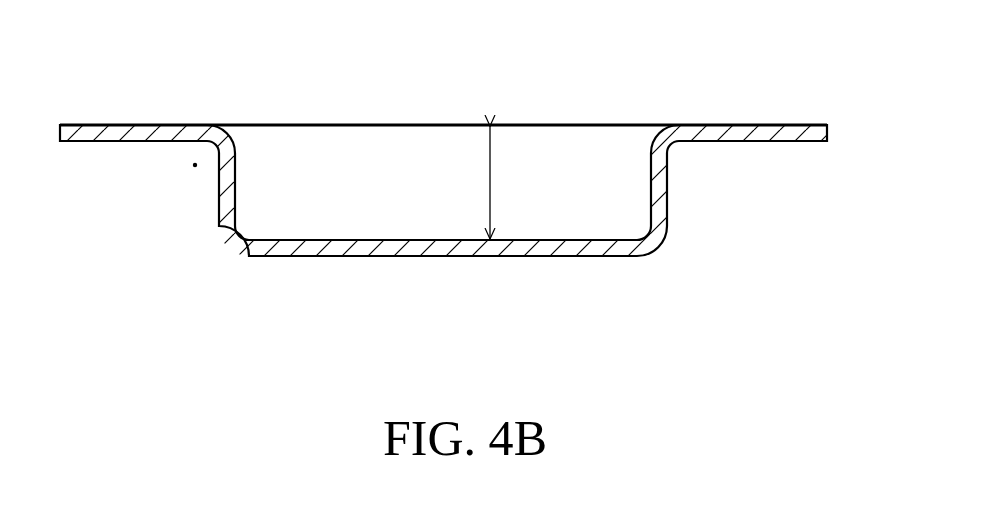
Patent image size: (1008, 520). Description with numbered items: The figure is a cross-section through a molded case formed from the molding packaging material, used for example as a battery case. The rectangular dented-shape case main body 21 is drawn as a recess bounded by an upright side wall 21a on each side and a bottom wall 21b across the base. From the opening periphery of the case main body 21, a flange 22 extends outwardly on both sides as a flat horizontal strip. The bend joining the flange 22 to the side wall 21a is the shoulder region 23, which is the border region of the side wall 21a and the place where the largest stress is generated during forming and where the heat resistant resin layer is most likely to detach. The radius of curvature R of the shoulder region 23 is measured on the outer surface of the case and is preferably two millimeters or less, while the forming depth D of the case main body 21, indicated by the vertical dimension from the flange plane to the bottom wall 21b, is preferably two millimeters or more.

The case main body 21 is at (310, 257).
The side wall 21a is at (227, 207).
The bottom wall 21b is at (415, 245).
The flange 22 is at (122, 128).
The shoulder region 23 is at (232, 130).
The radius of curvature R is at (215, 145).
The forming depth D is at (507, 182).